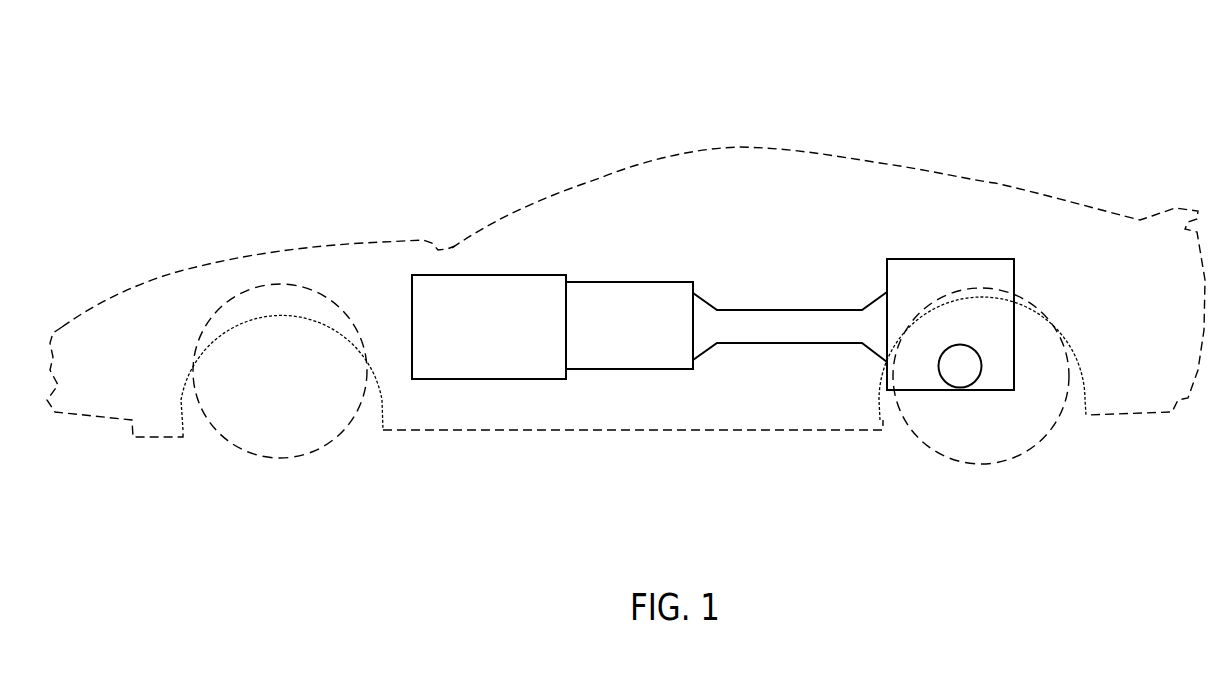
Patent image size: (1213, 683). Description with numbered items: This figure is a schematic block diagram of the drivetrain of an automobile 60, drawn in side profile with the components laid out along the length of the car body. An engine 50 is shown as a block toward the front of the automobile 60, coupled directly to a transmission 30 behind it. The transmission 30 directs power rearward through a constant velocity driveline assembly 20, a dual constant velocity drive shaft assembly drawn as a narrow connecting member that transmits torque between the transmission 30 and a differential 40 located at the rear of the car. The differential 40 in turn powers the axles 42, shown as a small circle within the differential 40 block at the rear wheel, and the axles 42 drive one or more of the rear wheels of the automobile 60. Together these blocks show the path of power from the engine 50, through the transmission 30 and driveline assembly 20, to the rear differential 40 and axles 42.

The constant velocity driveline assembly 20 is at (772, 332).
The transmission 30 is at (628, 343).
The differential 40 is at (1005, 367).
The axles 42 is at (958, 375).
The engine 50 is at (488, 345).
The automobile 60 is at (994, 183).